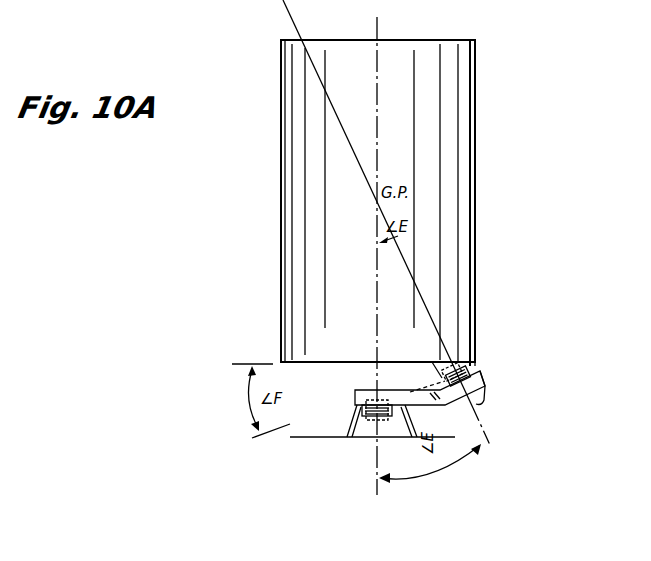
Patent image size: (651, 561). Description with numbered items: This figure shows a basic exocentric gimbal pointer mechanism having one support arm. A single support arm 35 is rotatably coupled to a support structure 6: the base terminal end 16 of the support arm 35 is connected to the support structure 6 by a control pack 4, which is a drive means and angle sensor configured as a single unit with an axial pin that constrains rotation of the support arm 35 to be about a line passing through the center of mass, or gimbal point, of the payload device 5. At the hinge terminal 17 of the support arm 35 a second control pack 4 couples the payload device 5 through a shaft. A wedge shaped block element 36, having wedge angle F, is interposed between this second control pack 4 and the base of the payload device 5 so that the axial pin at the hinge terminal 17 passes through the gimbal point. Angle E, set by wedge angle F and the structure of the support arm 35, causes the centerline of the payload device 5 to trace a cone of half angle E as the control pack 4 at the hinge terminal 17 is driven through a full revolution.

The payload device 5 is at (477, 172).
The base terminal end 16 is at (356, 392).
The control pack 4 is at (350, 412).
The wedge shaped block element 36 is at (457, 365).
The hinge terminal 17 is at (484, 382).
The support arm 35 is at (480, 398).
The support structure 6 is at (362, 440).